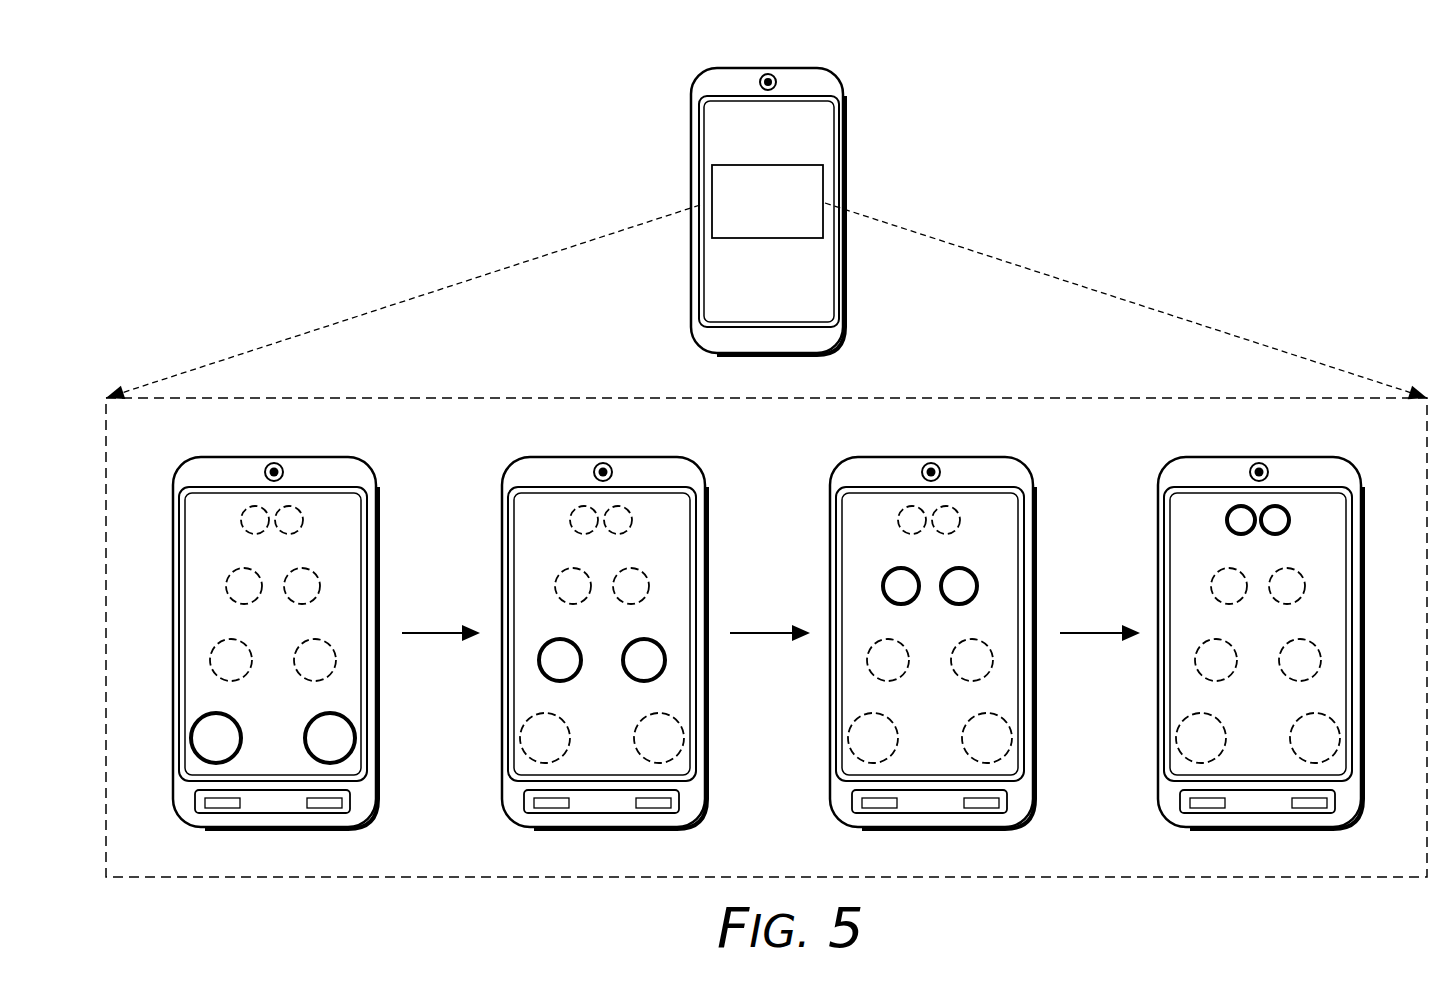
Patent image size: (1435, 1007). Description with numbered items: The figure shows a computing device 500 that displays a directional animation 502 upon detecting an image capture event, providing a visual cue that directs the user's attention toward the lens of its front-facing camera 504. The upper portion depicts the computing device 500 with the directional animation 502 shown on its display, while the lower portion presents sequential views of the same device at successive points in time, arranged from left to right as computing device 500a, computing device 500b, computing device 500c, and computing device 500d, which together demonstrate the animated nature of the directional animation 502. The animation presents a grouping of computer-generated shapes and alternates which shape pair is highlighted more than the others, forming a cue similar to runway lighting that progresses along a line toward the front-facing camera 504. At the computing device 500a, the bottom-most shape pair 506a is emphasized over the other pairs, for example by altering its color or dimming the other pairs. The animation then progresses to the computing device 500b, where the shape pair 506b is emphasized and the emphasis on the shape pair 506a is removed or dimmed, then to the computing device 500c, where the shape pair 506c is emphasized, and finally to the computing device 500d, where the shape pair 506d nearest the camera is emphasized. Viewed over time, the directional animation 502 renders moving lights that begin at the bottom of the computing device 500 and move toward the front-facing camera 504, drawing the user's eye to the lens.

The computing device 500 is at (813, 68).
The directional animation 502 is at (780, 164).
The front-facing camera 504 is at (765, 75).
The computing device 500a is at (271, 621).
The computing device 500b is at (610, 621).
The computing device 500c is at (944, 622).
The computing device 500d is at (1278, 622).
The shape pair 506a is at (216, 712).
The shape pair 506b is at (560, 638).
The shape pair 506c is at (901, 567).
The shape pair 506d is at (1241, 505).